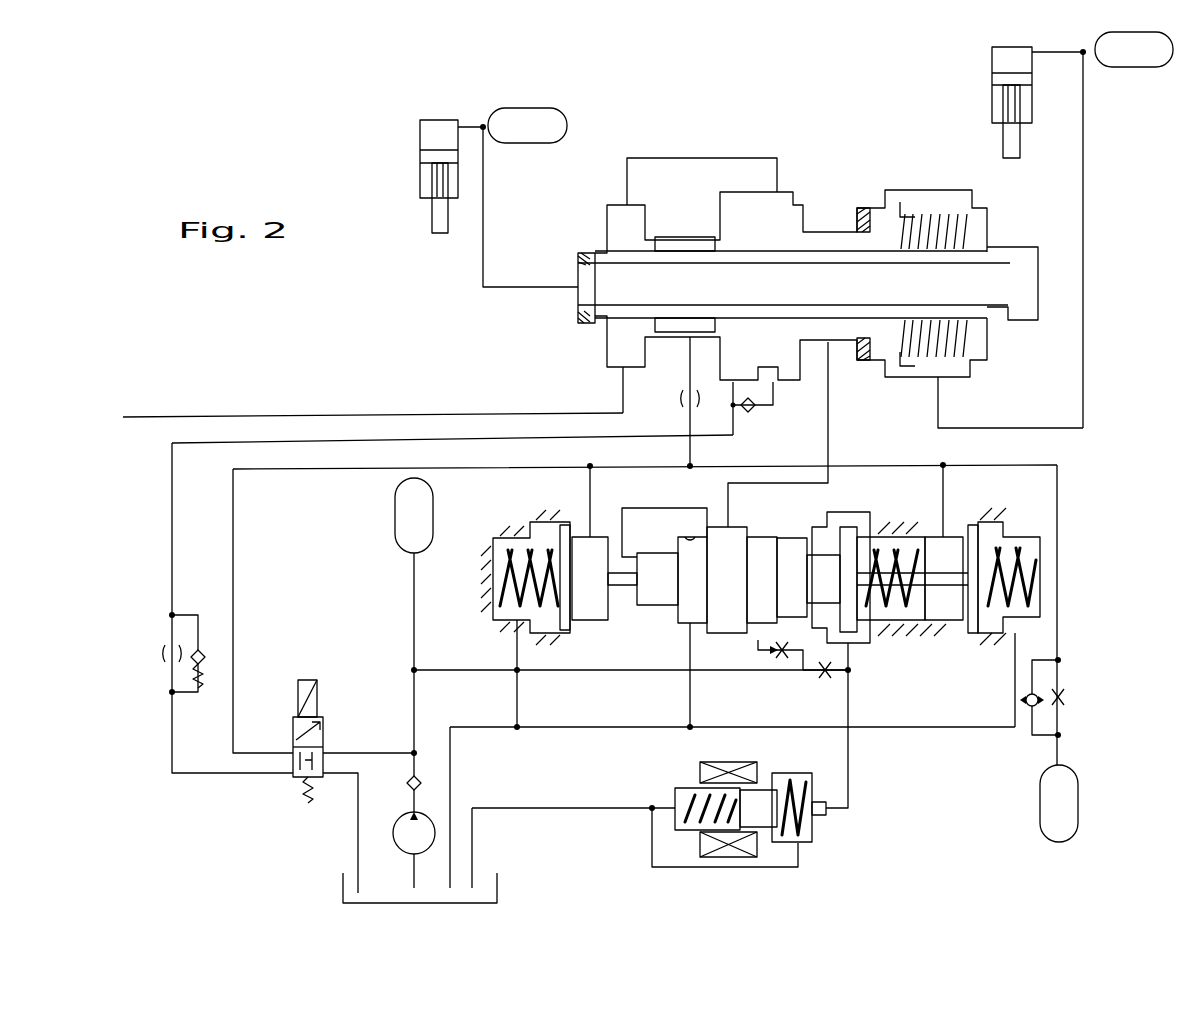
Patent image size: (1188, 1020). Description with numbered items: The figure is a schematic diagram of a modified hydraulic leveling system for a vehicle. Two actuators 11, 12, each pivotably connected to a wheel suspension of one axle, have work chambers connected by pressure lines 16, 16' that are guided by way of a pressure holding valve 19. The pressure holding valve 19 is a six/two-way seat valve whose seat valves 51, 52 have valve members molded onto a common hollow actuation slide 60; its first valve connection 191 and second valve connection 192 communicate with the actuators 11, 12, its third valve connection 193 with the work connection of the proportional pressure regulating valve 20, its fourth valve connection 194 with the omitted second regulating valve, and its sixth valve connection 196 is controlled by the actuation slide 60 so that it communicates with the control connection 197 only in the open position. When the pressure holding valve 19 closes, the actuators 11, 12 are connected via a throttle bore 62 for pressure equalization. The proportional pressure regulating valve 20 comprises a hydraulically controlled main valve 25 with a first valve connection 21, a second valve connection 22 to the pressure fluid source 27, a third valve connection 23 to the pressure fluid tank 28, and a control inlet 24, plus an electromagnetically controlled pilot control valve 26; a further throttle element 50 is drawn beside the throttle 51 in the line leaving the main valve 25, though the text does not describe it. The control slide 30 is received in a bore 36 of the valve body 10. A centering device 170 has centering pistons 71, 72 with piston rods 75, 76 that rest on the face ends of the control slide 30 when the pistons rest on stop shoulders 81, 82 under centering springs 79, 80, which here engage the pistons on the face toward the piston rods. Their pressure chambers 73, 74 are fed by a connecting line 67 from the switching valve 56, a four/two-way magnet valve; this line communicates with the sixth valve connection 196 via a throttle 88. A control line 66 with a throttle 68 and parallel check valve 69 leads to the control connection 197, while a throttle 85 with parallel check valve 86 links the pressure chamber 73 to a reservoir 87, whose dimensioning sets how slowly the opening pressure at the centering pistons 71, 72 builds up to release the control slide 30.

The valve body 10 is at (883, 650).
The actuator 11 is at (995, 50).
The actuator 12 is at (432, 120).
The pressure line 16 is at (670, 288).
The pressure line 16' is at (373, 353).
The pressure holding valve 19 is at (824, 226).
The proportional pressure regulating valve 20 is at (862, 758).
The first valve connection 21 is at (727, 560).
The second valve connection 22 is at (758, 625).
The third valve connection 23 is at (692, 625).
The control inlet 24 is at (852, 655).
The main valve 25 is at (668, 622).
The pilot control valve 26 is at (820, 838).
The pressure fluid source 27 is at (430, 840).
The pressure fluid tank 28 is at (372, 910).
The control slide 30 is at (765, 560).
The bore 36 is at (690, 537).
The throttle 50 is at (823, 679).
The seat valve 51 is at (869, 196).
The seat valve 52 is at (590, 247).
The switching valve 56 is at (288, 778).
The actuation slide 60 is at (1000, 252).
The throttle bore 62 is at (985, 313).
The control line 66 is at (172, 548).
The connecting line 67 is at (233, 575).
The throttle 68 is at (165, 655).
The check valve 69 is at (208, 664).
The centering piston 71 is at (975, 637).
The centering piston 72 is at (563, 622).
The pressure chamber 73 is at (950, 625).
The pressure chamber 74 is at (592, 612).
The piston rod 75 is at (940, 575).
The piston rod 76 is at (590, 580).
The centering spring 79 is at (1033, 577).
The centering spring 80 is at (493, 590).
The stop shoulder 81 is at (962, 525).
The stop shoulder 82 is at (565, 520).
The throttle 85 is at (1068, 697).
The check valve 86 is at (1030, 708).
The reservoir 87 is at (1062, 812).
The throttle 88 is at (683, 398).
The centering device 170 is at (1025, 525).
The first valve connection 191 is at (940, 385).
The second valve connection 192 is at (578, 285).
The third valve connection 193 is at (828, 346).
The fourth valve connection 194 is at (623, 370).
The sixth valve connection 196 is at (690, 340).
The control connection 197 is at (763, 389).